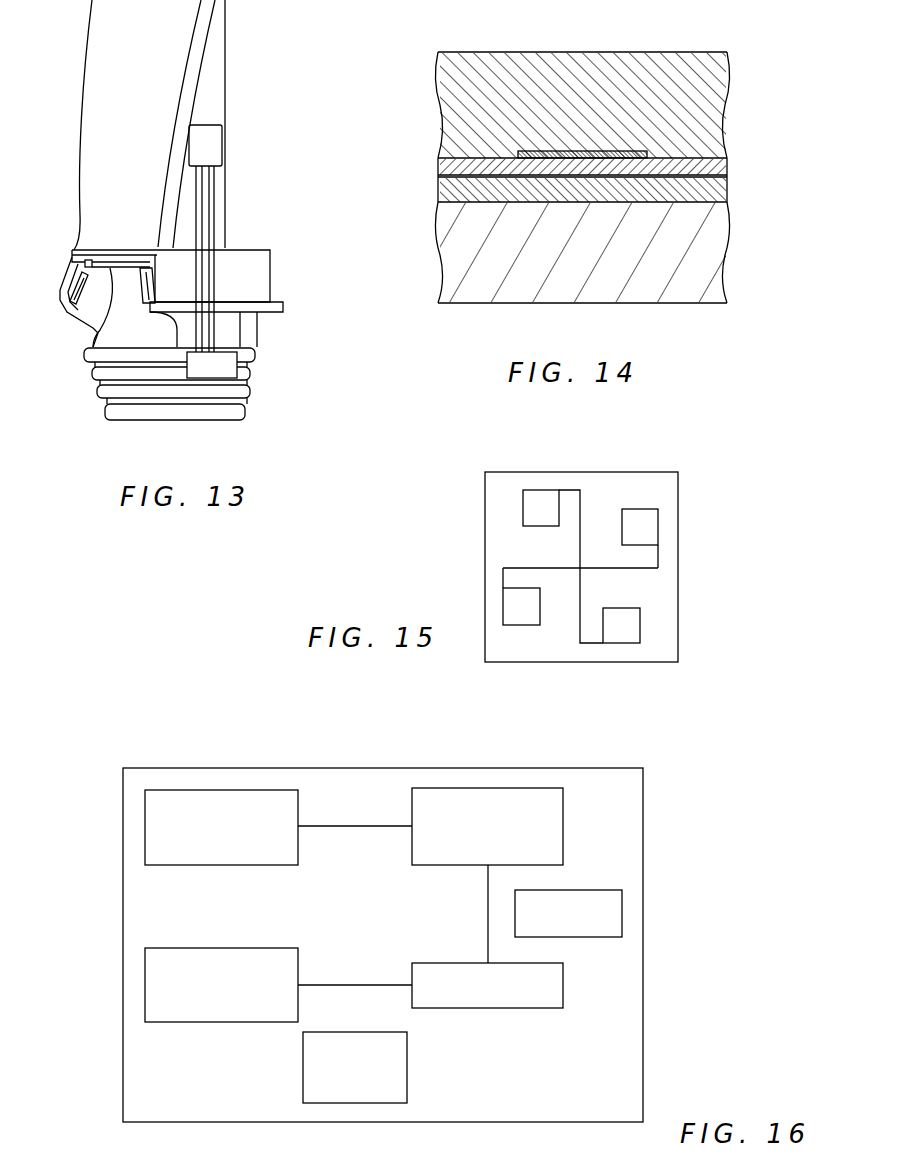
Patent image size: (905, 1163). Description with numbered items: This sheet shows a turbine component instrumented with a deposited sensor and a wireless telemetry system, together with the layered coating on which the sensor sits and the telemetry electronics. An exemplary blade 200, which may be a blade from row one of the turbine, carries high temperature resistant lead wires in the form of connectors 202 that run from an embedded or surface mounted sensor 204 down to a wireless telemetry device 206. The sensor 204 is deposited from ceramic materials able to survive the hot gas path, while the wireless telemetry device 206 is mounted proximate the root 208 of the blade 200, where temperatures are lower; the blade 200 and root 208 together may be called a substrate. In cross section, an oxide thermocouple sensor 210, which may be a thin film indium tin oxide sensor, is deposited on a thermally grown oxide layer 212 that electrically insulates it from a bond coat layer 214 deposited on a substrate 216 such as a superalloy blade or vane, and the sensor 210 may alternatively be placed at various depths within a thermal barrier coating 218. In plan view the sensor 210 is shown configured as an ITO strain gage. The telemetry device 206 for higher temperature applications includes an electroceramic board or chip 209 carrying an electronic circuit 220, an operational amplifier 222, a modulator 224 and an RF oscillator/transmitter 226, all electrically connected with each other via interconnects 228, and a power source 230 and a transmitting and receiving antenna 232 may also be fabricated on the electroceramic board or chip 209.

In FIG. 13, the blade 200 is at (171, 173).
In FIG. 13, the connectors 202 is at (197, 217).
In FIG. 13, the sensor 204 is at (205, 145).
In FIG. 13, the wireless telemetry device 206 is at (212, 366).
In FIG. 16, the wireless telemetry device 206 is at (174, 744).
In FIG. 13, the root 208 is at (213, 397).
In FIG. 16, the electroceramic board or chip 209 is at (145, 908).
In FIG. 14, the oxide thermocouple sensor 210 is at (535, 152).
In FIG. 15, the oxide thermocouple sensor 210 is at (678, 492).
In FIG. 14, the thermally grown oxide layer 212 is at (728, 168).
In FIG. 14, the bond coat layer 214 is at (728, 190).
In FIG. 14, the substrate 216 is at (728, 242).
In FIG. 14, the thermal barrier coating 218 is at (728, 82).
In FIG. 16, the electronic circuit 220 is at (145, 816).
In FIG. 16, the operational amplifier 222 is at (563, 826).
In FIG. 16, the modulator 224 is at (513, 1008).
In FIG. 16, the RF oscillator/transmitter 226 is at (145, 987).
In FIG. 16, the interconnects 228 is at (395, 826).
In FIG. 16, the power source 230 is at (407, 1068).
In FIG. 16, the transmitting and receiving antenna 232 is at (622, 906).